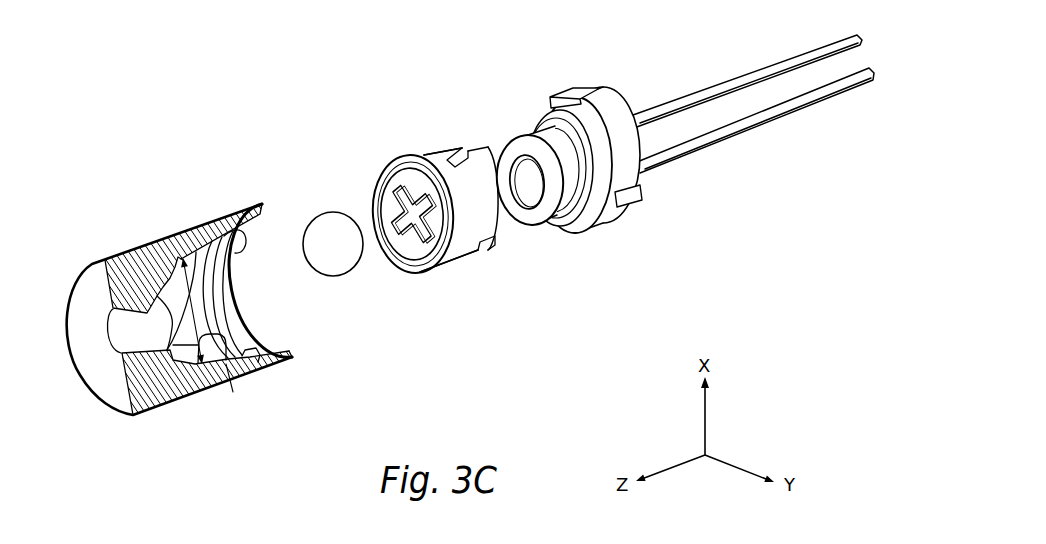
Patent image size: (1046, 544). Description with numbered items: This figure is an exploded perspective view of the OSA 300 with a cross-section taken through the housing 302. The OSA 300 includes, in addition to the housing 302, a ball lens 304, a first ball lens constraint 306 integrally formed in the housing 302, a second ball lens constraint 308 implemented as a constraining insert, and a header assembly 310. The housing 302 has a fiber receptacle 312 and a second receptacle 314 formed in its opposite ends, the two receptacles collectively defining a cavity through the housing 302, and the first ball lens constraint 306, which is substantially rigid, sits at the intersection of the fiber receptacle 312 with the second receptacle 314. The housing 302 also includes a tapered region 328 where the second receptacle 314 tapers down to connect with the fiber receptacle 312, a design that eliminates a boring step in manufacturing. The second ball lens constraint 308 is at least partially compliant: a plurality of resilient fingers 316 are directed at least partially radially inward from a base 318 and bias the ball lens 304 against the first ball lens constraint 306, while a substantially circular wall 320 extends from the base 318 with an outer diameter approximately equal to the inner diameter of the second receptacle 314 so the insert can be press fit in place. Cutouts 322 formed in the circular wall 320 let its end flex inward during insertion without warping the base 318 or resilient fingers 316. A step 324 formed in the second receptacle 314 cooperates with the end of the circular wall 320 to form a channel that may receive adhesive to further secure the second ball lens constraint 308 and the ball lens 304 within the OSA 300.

The OSA 300 is at (314, 126).
The housing 302 is at (172, 237).
The ball lens 304 is at (331, 212).
The first ball lens constraint 306 is at (177, 367).
The second ball lens constraint 308 is at (447, 132).
The header assembly 310 is at (572, 90).
The fiber receptacle 312 is at (126, 338).
The second receptacle 314 is at (217, 312).
The resilient fingers 316 is at (390, 216).
The base 318 is at (379, 167).
The substantially circular wall 320 is at (468, 222).
The cutouts 322 is at (466, 162).
The step 324 is at (244, 222).
The tapered region 328 is at (160, 249).